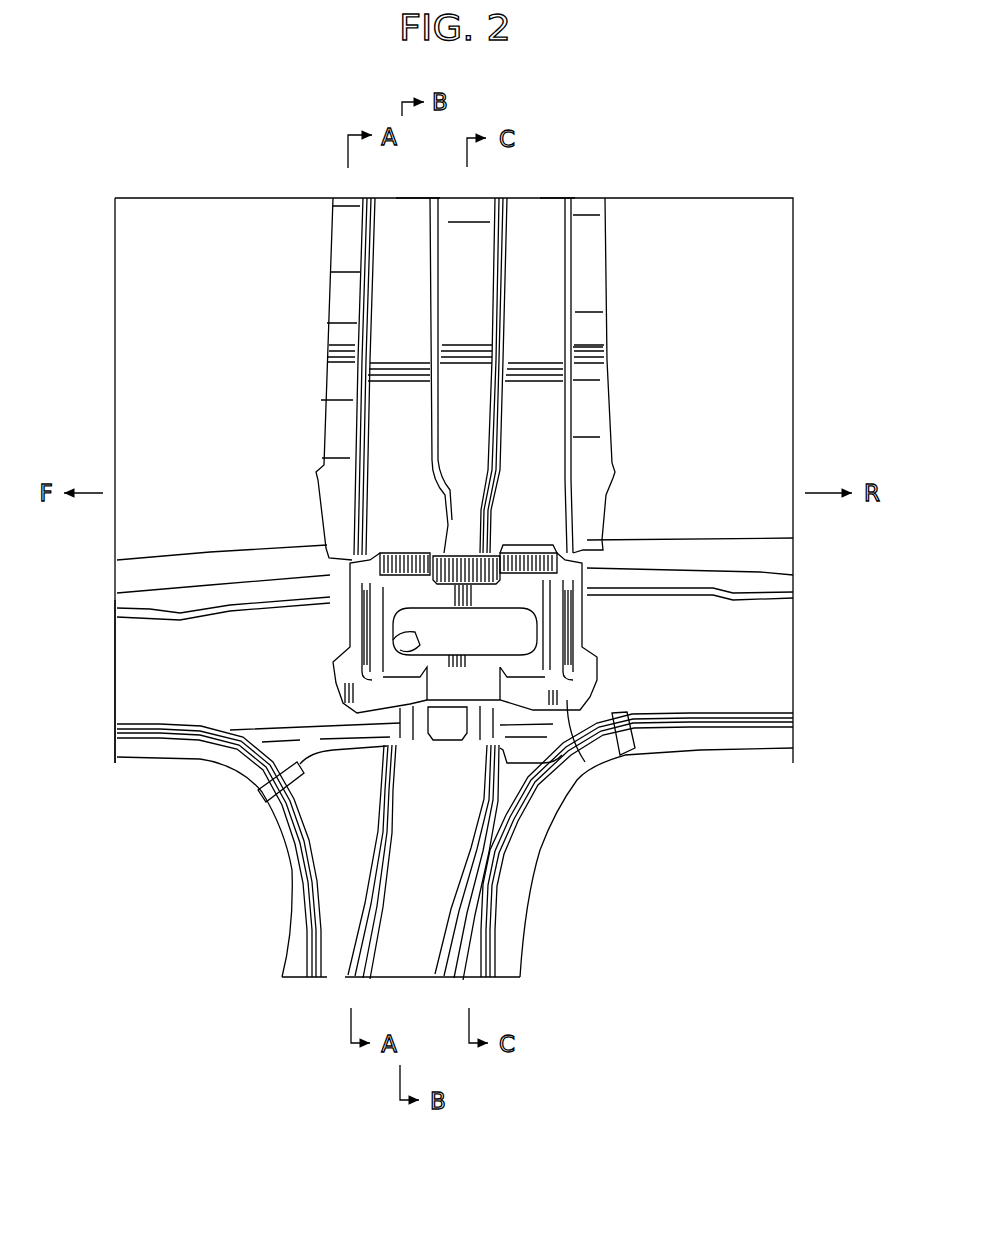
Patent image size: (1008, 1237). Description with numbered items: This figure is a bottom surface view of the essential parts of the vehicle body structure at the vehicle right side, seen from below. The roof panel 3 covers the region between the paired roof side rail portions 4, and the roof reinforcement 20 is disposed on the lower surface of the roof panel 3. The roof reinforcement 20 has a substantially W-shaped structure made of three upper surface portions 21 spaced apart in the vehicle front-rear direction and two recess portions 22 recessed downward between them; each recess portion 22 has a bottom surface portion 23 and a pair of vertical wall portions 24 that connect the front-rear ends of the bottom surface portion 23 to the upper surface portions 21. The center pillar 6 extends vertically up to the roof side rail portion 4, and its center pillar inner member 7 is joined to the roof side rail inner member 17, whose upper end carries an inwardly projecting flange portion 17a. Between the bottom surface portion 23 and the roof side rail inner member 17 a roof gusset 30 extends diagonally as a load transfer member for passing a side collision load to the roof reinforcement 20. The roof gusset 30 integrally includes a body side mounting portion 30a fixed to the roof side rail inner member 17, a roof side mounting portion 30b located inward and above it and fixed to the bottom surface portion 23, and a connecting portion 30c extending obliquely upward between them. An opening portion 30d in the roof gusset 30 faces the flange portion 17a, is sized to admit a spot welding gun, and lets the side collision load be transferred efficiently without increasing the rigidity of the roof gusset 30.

The roof panel 3 is at (186, 356).
The roof side rail portion 4 is at (110, 685).
The center pillar 6 is at (280, 923).
The center pillar inner member 7 is at (399, 918).
The roof side rail inner member 17 is at (213, 674).
The flange portion 17a is at (690, 578).
The roof reinforcement 20 is at (613, 302).
The upper surface portion 21 is at (345, 297).
The recess portion 22 is at (399, 197).
The bottom surface portion 23 is at (388, 438).
The vertical wall portion 24 is at (503, 254).
The roof gusset 30 is at (593, 632).
The body side mounting portion 30a is at (586, 763).
The roof side mounting portion 30b is at (525, 549).
The connecting portion 30c is at (400, 603).
The opening portion 30d is at (400, 638).